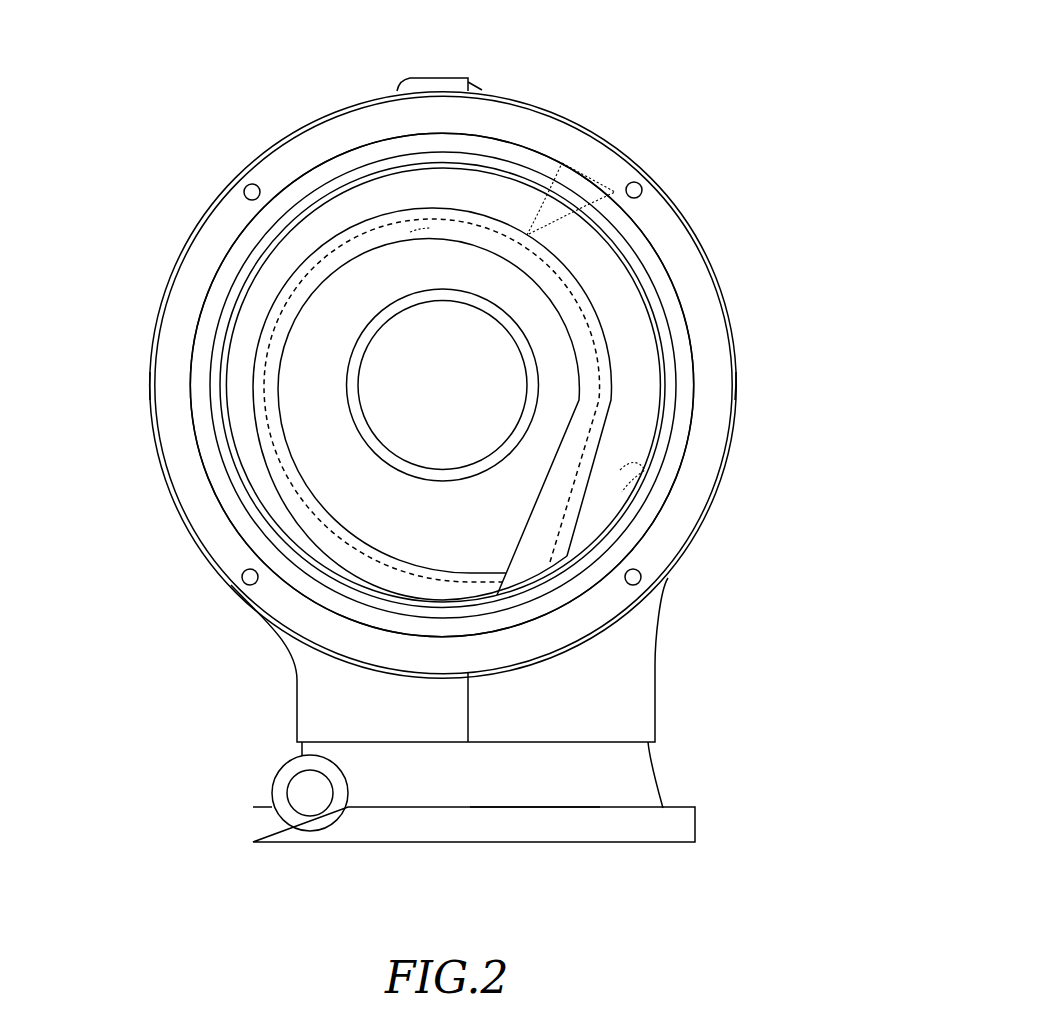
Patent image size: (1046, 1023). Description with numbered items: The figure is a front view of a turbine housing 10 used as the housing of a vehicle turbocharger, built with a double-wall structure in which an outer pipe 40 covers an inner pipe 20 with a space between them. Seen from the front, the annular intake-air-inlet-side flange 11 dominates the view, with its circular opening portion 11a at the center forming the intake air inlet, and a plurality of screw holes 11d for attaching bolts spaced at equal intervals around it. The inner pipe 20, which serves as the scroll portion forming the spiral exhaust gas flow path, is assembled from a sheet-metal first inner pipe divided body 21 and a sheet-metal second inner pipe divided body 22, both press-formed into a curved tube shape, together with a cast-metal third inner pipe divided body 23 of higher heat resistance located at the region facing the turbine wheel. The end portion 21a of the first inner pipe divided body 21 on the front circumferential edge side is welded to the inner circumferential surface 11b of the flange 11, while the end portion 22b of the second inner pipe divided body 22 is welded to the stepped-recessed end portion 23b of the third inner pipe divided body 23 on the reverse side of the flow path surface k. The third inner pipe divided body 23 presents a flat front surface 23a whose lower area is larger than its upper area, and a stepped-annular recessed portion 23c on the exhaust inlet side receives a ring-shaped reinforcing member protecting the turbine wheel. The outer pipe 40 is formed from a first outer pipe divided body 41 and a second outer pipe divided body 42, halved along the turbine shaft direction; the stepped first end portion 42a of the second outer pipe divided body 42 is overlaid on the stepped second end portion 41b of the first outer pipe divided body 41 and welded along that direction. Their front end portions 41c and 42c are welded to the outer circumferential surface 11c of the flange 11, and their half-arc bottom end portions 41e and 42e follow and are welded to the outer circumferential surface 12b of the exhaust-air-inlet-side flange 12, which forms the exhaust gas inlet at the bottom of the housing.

The turbine housing 10 is at (686, 667).
The intake-air-inlet-side flange 11 is at (697, 233).
The circular opening portion 11a is at (643, 490).
The inner circumferential surface 11b is at (441, 384).
The outer circumferential surface 11c is at (192, 227).
The screw holes 11d is at (245, 187).
The exhaust-air-inlet-side flange 12 is at (500, 843).
The outer circumferential surface 12b is at (540, 750).
The inner pipe 20 is at (465, 336).
The first inner pipe divided body 21 is at (665, 417).
The end portion 21a is at (667, 313).
The second inner pipe divided body 22 is at (619, 514).
The end portion 22b is at (373, 220).
The third inner pipe divided body 23 is at (558, 246).
The front surface 23a is at (320, 462).
The end portion 23b is at (562, 163).
The recessed portion 23c is at (353, 343).
The flow path surface k is at (416, 232).
The outer pipe 40 is at (441, 446).
The first outer pipe divided body 41 is at (660, 703).
The second end portion 41b is at (478, 86).
The end portion 41c is at (740, 373).
The bottom end portion 41e is at (605, 718).
The second outer pipe divided body 42 is at (295, 712).
The first end portion 42a is at (440, 78).
The end portion 42c is at (148, 390).
The bottom end portion 42e is at (383, 725).